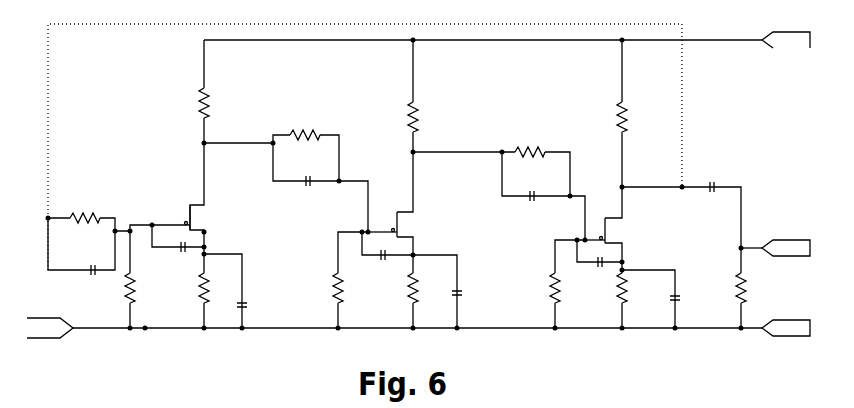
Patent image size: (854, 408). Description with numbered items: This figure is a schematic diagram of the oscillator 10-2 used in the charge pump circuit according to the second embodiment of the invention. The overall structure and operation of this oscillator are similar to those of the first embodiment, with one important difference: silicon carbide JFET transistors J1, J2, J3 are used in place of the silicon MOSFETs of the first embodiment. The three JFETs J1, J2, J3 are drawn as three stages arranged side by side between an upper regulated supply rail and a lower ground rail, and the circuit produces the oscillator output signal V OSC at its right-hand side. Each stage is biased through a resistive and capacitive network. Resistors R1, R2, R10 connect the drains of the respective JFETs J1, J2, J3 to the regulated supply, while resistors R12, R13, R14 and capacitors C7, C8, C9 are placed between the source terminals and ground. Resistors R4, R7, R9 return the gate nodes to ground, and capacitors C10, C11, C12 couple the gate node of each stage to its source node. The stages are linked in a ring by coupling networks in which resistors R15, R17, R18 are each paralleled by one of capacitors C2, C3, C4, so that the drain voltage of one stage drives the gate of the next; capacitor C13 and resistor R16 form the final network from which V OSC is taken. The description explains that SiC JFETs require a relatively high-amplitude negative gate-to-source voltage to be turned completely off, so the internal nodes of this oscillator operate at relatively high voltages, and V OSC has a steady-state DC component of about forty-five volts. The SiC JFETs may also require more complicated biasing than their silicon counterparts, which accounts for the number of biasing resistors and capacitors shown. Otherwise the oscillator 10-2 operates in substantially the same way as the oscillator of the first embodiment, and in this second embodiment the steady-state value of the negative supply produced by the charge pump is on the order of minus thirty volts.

The oscillator circuit 10-2 is at (415, 204).
The resistor 50K R1 is at (217, 80).
The resistor 50K R2 is at (426, 96).
The resistor 50K R10 is at (635, 113).
The resistor 50K R15 is at (74, 220).
The resistor 50K R17 is at (305, 135).
The resistor 50K R18 is at (530, 153).
The resistor 50K R4 is at (143, 279).
The resistor 50K R7 is at (351, 299).
The resistor 50K R9 is at (568, 300).
The resistor 100K R12 is at (220, 291).
The resistor 100K R13 is at (430, 291).
The resistor 100K R14 is at (639, 300).
The resistor 100K R16 is at (758, 300).
The capacitor 0.001uF C2 is at (91, 270).
The capacitor 0.001uF C3 is at (307, 177).
The capacitor 0.001uF C4 is at (533, 199).
The capacitor 0.001uF C13 is at (712, 190).
The capacitor 200pF C10 is at (183, 247).
The capacitor 200pF C11 is at (385, 256).
The capacitor 200pF C12 is at (601, 265).
The capacitor 10000pF C7 is at (266, 311).
The capacitor 10000pF C8 is at (481, 297).
The capacitor 10000pF C9 is at (699, 302).
The SiC JFET J1 is at (218, 223).
The SiC JFET J2 is at (426, 203).
The SiC JFET J3 is at (635, 230).